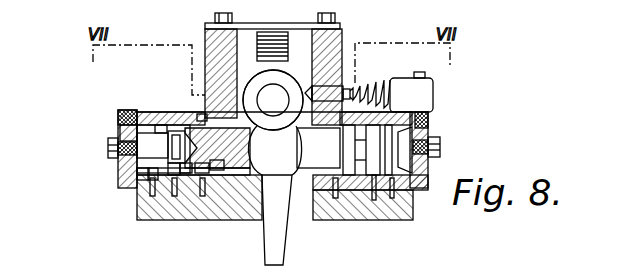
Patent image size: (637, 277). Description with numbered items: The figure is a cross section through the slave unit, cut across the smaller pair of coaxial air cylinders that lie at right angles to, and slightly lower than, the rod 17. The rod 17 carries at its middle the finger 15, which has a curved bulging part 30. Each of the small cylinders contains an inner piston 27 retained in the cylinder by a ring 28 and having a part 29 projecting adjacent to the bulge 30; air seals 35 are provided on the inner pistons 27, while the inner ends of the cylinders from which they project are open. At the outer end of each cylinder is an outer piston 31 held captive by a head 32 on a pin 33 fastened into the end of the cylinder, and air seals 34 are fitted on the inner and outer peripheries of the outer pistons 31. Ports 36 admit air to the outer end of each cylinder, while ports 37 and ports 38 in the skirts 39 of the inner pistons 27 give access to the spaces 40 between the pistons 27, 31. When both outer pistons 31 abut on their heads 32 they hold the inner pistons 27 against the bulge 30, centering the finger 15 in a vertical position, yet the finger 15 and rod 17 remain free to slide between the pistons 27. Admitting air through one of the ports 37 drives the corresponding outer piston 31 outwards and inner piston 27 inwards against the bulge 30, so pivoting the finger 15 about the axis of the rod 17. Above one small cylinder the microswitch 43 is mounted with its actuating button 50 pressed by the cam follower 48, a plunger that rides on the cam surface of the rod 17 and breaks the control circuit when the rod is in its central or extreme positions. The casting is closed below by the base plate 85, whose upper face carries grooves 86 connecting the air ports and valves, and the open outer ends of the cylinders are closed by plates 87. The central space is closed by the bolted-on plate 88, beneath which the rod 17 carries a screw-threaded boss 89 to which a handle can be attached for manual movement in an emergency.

The finger 15 is at (276, 255).
The rod 17 is at (273, 100).
The inner piston 27 is at (218, 168).
The ring 28 is at (250, 170).
The projecting part 29 is at (253, 128).
The curved bulging part 30 is at (274, 150).
The outer piston 31 is at (143, 177).
The head 32 is at (152, 180).
The pin 33 is at (130, 138).
The air seals 34 is at (165, 128).
The air seals 35 is at (199, 114).
The ports 36 is at (400, 188).
The ports 37 is at (176, 175).
The ports 38 is at (186, 172).
The skirts 39 is at (206, 170).
The spaces 40 is at (163, 149).
The switch 43 is at (434, 93).
The cam follower 48 is at (324, 89).
The actuating button 50 is at (358, 86).
The base plate 85 is at (412, 203).
The grooves 86 is at (398, 185).
The plates 87 is at (118, 155).
The plate 88 is at (236, 26).
The screw-threaded boss 89 is at (266, 50).